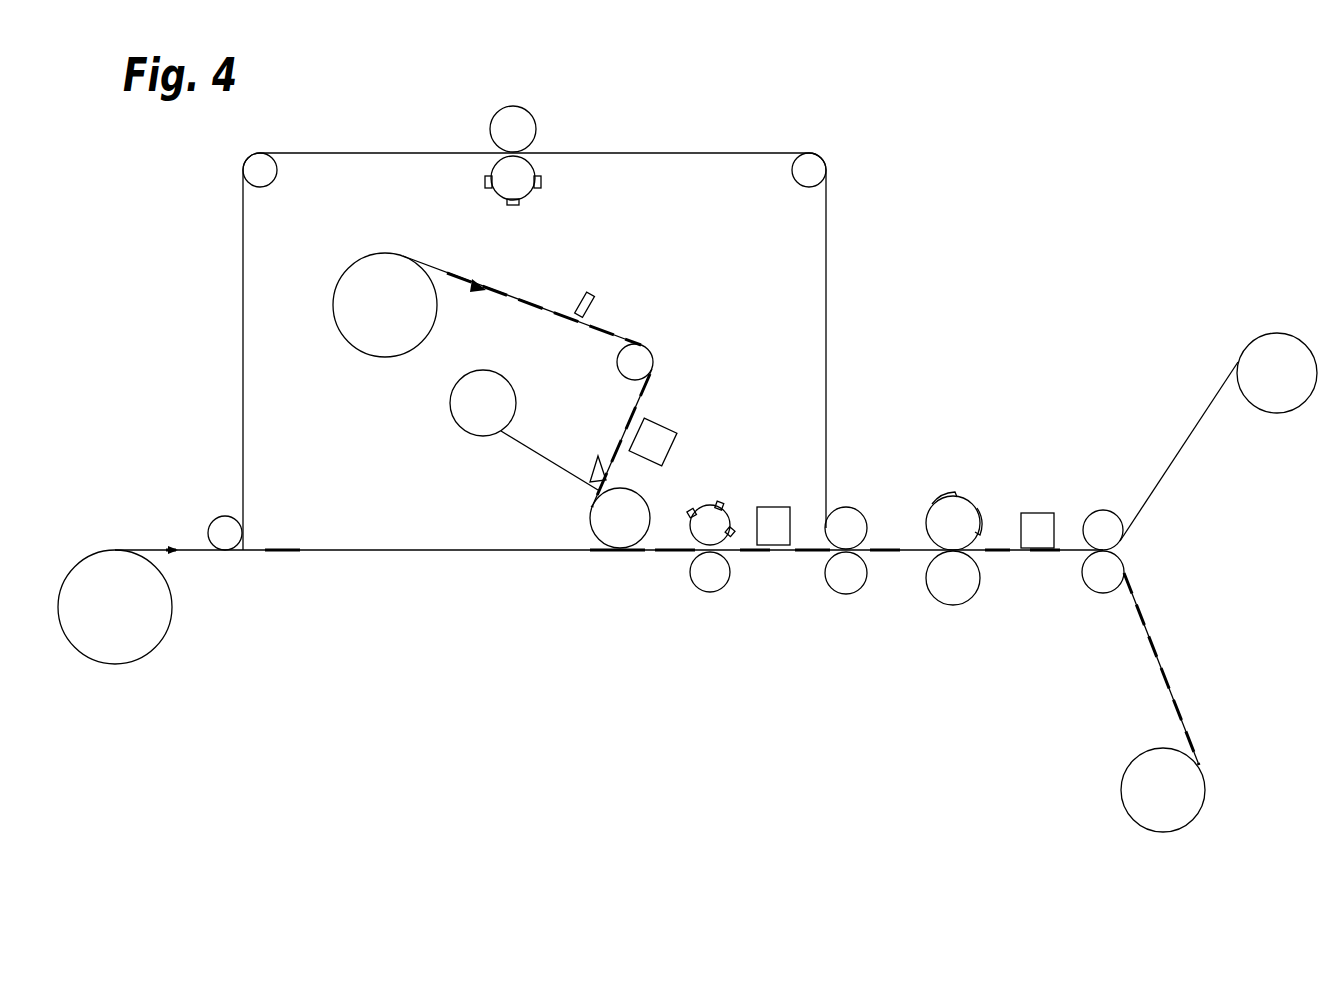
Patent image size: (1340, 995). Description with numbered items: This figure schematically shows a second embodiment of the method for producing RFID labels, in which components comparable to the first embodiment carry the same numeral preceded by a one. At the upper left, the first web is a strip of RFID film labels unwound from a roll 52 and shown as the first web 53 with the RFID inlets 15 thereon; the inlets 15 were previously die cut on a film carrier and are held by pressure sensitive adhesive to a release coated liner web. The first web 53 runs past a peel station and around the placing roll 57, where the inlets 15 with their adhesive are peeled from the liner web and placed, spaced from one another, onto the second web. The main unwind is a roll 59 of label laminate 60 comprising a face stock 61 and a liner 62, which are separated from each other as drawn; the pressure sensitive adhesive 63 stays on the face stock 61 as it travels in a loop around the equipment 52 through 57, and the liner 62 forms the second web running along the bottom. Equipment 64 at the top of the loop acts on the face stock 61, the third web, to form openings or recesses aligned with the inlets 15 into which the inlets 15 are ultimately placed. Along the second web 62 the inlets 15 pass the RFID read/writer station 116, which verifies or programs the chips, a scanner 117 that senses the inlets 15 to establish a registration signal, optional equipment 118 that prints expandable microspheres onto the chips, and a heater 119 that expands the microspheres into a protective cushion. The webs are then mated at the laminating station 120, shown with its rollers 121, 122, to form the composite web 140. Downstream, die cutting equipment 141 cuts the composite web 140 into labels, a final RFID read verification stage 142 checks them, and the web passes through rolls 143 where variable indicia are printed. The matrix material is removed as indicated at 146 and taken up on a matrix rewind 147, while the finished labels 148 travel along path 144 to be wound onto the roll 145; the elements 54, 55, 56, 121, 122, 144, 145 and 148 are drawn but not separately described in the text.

The RFID inlet 15 is at (558, 311).
The roll of RFID film labels 52 is at (362, 357).
The first web 53 is at (452, 279).
The guide roller 54 is at (603, 450).
The web path segment 55 is at (515, 440).
The roll 56 is at (459, 430).
The placing roll 57 is at (636, 507).
The roll of label laminate 59 is at (150, 652).
The label laminate 60 is at (186, 548).
The face stock 61 is at (243, 372).
The liner 62 is at (316, 552).
The pressure sensitive adhesive 63 is at (244, 423).
The opening-forming equipment 64 is at (477, 108).
The RFID read/writer station 116 is at (678, 415).
The scanner 117 is at (573, 291).
The microsphere printing equipment 118 is at (684, 565).
The heater 119 is at (792, 490).
The laminating station 120 is at (862, 484).
The upper nip roller 121 is at (833, 508).
The lower nip roller 122 is at (827, 587).
The composite web 140 is at (888, 550).
The die cutting equipment 141 is at (966, 618).
The final RFID read verification stage 142 is at (1046, 497).
The printing rolls 143 is at (1092, 600).
The web path segment 144 is at (1173, 638).
The take-up roll 145 is at (1164, 833).
The matrix material removal 146 is at (1182, 450).
The matrix rewind 147 is at (1300, 402).
The laminate strips 148 is at (1190, 744).